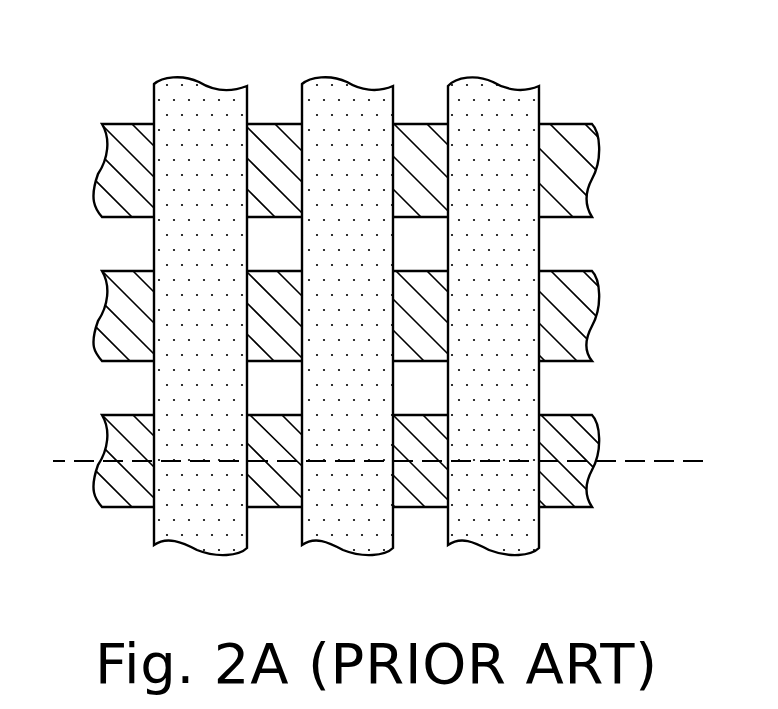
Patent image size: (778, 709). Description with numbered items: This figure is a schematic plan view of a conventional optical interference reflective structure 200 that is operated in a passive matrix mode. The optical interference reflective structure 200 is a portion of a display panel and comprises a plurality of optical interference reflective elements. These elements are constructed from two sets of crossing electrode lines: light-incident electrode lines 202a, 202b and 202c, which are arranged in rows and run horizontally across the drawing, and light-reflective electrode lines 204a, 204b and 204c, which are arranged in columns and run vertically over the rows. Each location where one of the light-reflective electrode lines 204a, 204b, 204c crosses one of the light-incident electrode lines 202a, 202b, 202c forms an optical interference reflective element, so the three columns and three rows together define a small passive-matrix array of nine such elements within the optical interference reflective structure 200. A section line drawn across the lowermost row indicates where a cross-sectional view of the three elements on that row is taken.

The optical interference reflective structure 200 is at (626, 582).
The light-incident electrode line 202a is at (572, 472).
The light-incident electrode line 202b is at (572, 324).
The light-incident electrode line 202c is at (572, 179).
The light-reflective electrode line 204a is at (192, 100).
The light-reflective electrode line 204b is at (338, 100).
The light-reflective electrode line 204c is at (485, 102).